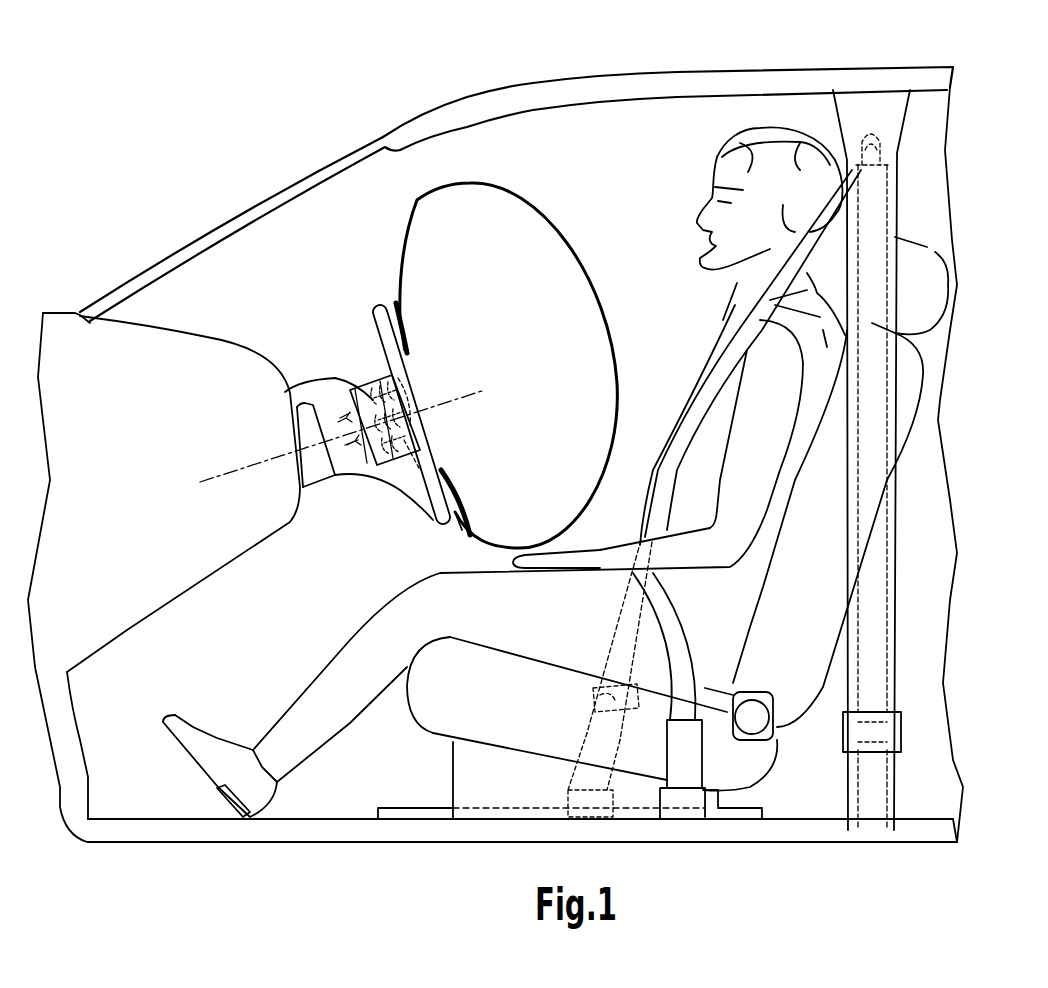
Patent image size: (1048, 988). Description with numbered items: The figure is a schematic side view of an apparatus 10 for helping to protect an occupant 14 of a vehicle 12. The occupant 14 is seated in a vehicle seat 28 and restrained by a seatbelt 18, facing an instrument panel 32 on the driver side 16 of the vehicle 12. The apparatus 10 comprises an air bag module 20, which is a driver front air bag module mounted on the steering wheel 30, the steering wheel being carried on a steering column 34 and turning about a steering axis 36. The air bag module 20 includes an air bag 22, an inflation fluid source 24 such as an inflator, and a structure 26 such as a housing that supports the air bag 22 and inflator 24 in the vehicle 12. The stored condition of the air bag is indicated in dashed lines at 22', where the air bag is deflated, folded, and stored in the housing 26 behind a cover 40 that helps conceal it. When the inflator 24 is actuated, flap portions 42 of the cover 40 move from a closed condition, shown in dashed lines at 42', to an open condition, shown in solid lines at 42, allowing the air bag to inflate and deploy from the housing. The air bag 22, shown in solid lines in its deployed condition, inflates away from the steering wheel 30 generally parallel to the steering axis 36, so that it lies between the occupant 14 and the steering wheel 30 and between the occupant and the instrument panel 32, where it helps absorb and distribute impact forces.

The vehicle occupant protection apparatus 10 is at (302, 296).
The vehicle 12 is at (227, 145).
The occupant 14 is at (627, 202).
The driver side 16 is at (545, 61).
The seatbelt 18 is at (833, 213).
The air bag module 20 is at (362, 350).
The air bag 22 is at (517, 365).
The stored condition of the air bag 22' is at (398, 464).
The inflation fluid source 24 is at (377, 447).
The housing 26 is at (290, 388).
The vehicle seat 28 is at (820, 517).
The steering wheel 30 is at (375, 315).
The instrument panel 32 is at (215, 357).
The steering column 34 is at (317, 473).
The steering axis 36 is at (247, 463).
The cover 40 is at (408, 337).
The flap portions 42 is at (407, 382).
The closed condition of the flap portion 42' is at (446, 424).